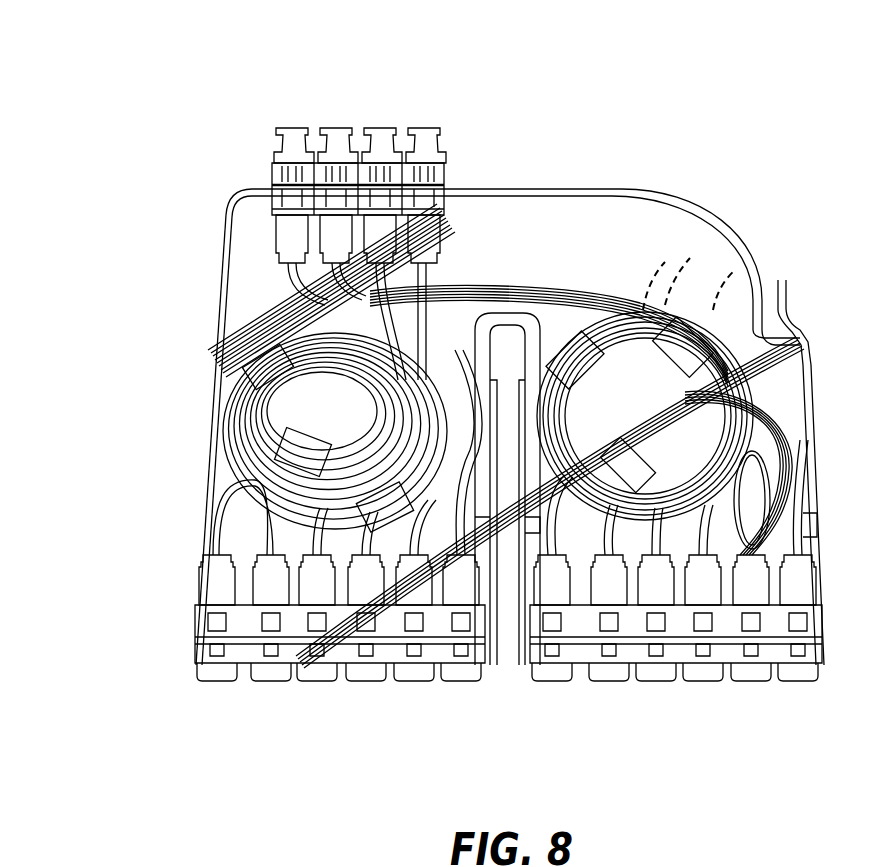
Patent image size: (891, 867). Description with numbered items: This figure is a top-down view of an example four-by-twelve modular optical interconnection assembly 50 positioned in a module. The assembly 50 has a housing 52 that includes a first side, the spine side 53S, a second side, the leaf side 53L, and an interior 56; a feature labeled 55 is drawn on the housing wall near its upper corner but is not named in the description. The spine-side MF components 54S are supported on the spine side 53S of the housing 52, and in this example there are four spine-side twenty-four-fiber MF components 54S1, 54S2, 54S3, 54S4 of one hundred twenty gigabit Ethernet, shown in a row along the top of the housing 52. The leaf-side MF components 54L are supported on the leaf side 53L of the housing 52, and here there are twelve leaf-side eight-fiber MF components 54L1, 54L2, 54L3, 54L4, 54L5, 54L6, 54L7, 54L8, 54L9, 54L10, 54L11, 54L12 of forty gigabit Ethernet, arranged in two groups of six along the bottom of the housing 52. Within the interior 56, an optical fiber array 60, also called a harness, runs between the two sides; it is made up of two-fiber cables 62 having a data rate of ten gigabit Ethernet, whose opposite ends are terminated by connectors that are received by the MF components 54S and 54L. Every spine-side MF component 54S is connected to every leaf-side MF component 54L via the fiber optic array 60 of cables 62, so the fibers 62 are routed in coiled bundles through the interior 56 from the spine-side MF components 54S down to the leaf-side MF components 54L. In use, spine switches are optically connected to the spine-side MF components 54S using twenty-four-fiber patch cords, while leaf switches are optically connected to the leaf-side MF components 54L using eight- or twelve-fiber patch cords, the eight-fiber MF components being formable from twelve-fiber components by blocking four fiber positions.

The optical interconnection assembly 50 is at (163, 108).
The housing 52 is at (223, 326).
The first side (spine side) 53S is at (628, 189).
The second side (leaf side) 53L is at (195, 665).
The spine-side MF components 54S is at (253, 140).
The spine-side MF component 54S1 is at (292, 128).
The spine-side MF component 54S2 is at (336, 128).
The spine-side MF component 54S3 is at (380, 128).
The spine-side MF component 54S4 is at (424, 128).
The leaf-side MF components 54L is at (183, 738).
The leaf-side MF component 54L1 is at (217, 683).
The leaf-side MF component 54L2 is at (271, 683).
The leaf-side MF component 54L3 is at (317, 683).
The leaf-side MF component 54L4 is at (366, 683).
The leaf-side MF component 54L5 is at (414, 683).
The leaf-side MF component 54L6 is at (461, 683).
The leaf-side MF component 54L7 is at (552, 683).
The leaf-side MF component 54L8 is at (609, 683).
The leaf-side MF component 54L9 is at (656, 683).
The leaf-side MF component 54L10 is at (703, 683).
The leaf-side MF component 54L11 is at (751, 683).
The leaf-side MF component 54L12 is at (798, 683).
The housing corner wall 55 is at (242, 272).
The interior 56 is at (737, 277).
The optical fiber array 60 is at (607, 283).
The optical fibers 62 is at (668, 292).